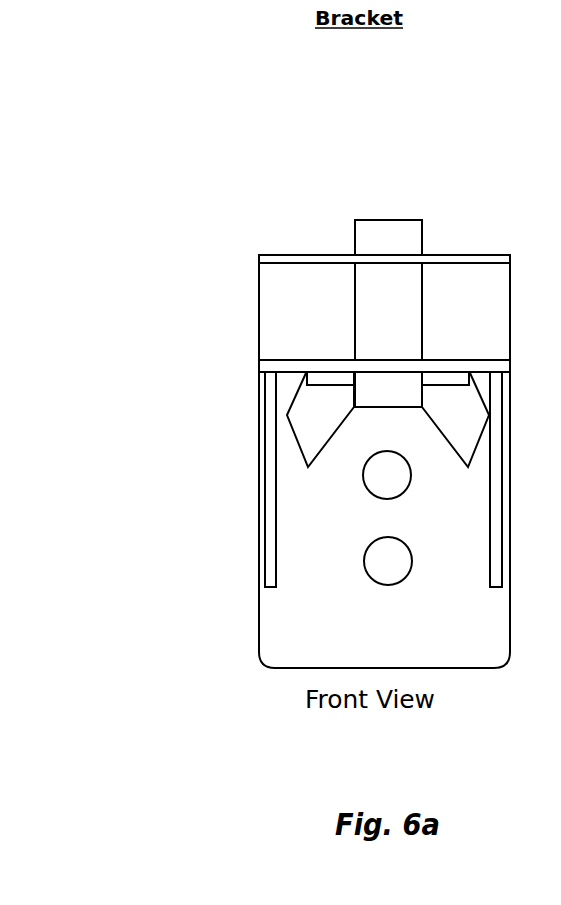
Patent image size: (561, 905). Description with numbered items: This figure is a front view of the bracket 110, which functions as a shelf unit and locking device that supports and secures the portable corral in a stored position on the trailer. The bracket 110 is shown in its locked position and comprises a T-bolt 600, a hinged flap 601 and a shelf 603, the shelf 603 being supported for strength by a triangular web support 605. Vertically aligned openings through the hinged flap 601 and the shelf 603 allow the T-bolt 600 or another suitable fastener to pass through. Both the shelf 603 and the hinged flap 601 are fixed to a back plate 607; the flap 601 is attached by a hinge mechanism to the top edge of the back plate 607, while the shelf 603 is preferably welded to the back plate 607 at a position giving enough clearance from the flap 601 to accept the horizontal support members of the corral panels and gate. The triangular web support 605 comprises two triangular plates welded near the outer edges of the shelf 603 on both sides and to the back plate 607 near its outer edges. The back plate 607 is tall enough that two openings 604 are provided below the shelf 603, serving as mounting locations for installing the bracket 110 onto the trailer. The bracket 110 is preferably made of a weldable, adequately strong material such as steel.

The bracket 110 is at (140, 156).
The T-bolt 600 is at (395, 220).
The hinged flap 601 is at (311, 255).
The shelf 603 is at (280, 360).
The openings 604 is at (397, 492).
The triangular web support 605 is at (266, 520).
The back plate 607 is at (259, 617).